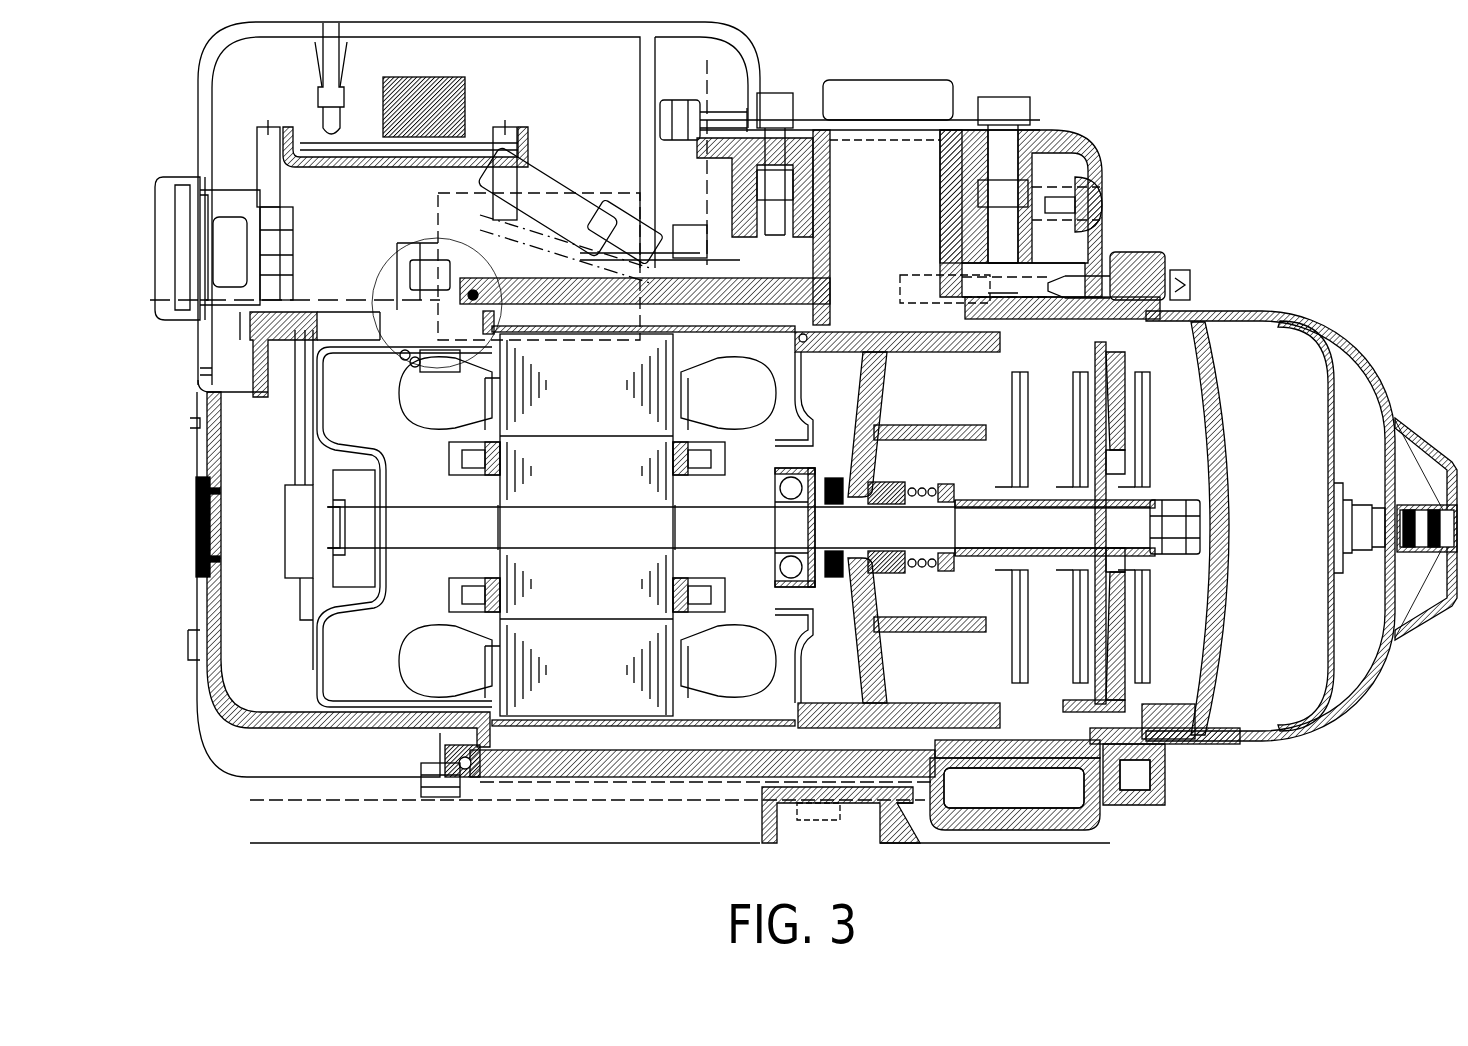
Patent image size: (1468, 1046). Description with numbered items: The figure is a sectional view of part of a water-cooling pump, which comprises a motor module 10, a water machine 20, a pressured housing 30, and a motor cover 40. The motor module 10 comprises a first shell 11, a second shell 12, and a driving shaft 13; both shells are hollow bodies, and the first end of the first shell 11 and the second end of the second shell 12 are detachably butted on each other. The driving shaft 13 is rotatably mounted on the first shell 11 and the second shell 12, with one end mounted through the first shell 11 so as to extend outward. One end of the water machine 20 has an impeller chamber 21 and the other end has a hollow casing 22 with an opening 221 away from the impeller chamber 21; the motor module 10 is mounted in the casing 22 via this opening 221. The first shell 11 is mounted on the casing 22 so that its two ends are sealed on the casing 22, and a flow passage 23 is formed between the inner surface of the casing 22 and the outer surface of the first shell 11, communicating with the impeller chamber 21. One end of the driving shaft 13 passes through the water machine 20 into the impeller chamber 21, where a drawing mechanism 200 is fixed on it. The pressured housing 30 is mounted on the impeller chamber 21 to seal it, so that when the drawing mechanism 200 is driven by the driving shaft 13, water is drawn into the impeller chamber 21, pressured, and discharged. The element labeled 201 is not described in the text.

The motor module 10 is at (378, 694).
The first shell 11 is at (720, 728).
The second shell 12 is at (320, 703).
The driving shaft 13 is at (1122, 516).
The water machine 20 is at (1034, 133).
The drawing mechanism 200 is at (1053, 376).
The base foot 201 is at (878, 822).
The impeller chamber 21 is at (1031, 713).
The casing 22 is at (560, 773).
The opening 221 is at (463, 772).
The flow passage 23 is at (605, 746).
The pressured housing 30 is at (1361, 316).
The motor cover 40 is at (184, 728).